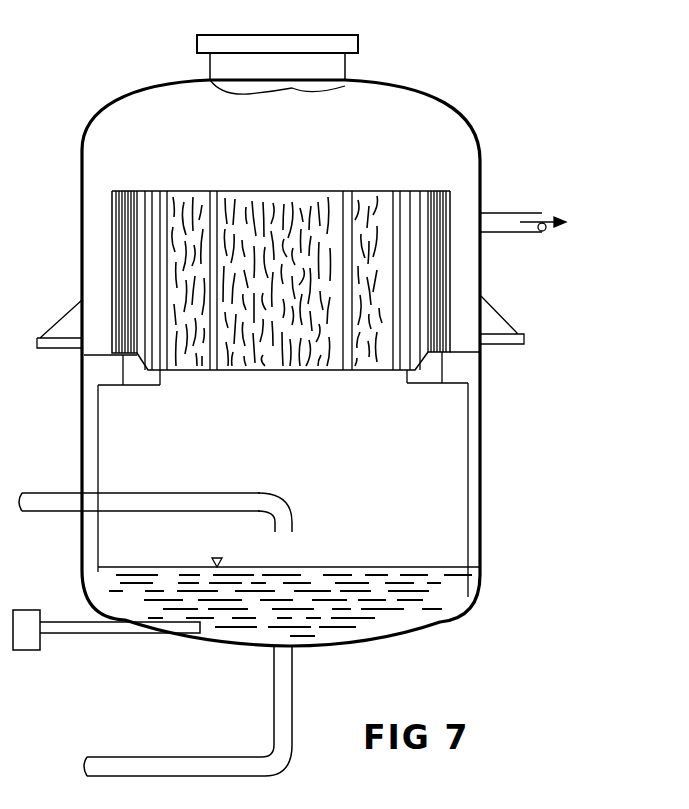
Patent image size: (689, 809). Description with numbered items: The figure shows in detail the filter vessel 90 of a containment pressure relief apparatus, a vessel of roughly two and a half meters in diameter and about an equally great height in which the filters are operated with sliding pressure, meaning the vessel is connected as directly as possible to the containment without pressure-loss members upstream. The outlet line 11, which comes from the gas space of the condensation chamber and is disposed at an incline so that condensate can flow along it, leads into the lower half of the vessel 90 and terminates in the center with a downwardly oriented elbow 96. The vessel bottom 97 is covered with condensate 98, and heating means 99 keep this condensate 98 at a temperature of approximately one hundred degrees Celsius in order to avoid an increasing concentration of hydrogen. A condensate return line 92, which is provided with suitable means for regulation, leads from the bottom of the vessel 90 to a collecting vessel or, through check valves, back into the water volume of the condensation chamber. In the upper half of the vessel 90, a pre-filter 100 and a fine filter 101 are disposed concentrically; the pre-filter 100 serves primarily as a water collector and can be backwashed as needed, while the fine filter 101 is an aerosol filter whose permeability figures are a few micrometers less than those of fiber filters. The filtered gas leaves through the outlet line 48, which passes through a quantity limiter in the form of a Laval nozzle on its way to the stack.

The outlet line 11 is at (50, 497).
The outlet line 48 is at (502, 227).
The vessel 90 is at (481, 501).
The condensate return line 92 is at (285, 693).
The elbow 96 is at (293, 518).
The vessel bottom 97 is at (403, 632).
The condensate 98 is at (382, 575).
The heating means 99 is at (150, 622).
The pre-filter 100 is at (393, 217).
The fine filter 101 is at (442, 213).